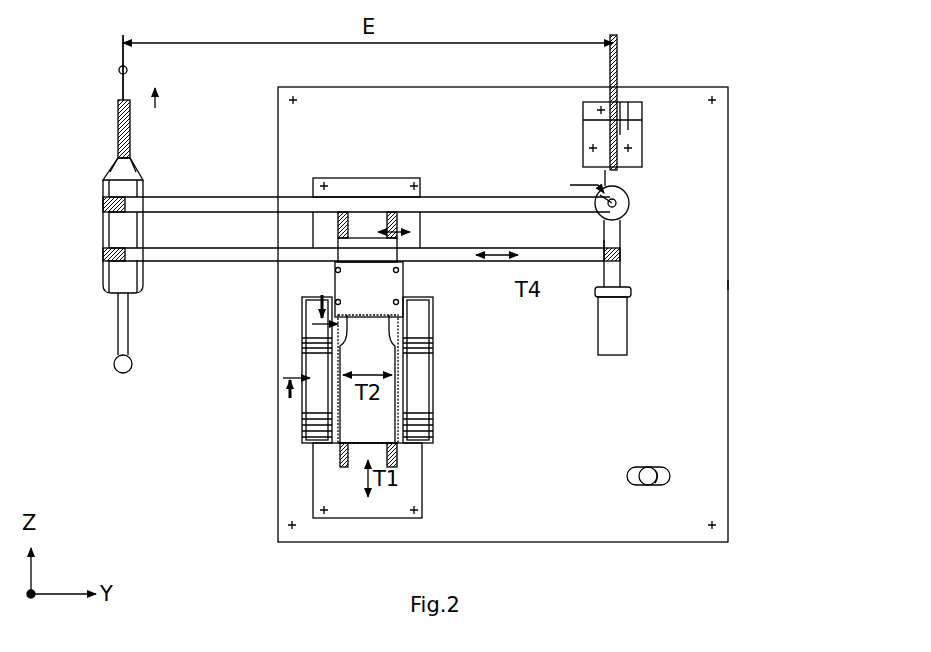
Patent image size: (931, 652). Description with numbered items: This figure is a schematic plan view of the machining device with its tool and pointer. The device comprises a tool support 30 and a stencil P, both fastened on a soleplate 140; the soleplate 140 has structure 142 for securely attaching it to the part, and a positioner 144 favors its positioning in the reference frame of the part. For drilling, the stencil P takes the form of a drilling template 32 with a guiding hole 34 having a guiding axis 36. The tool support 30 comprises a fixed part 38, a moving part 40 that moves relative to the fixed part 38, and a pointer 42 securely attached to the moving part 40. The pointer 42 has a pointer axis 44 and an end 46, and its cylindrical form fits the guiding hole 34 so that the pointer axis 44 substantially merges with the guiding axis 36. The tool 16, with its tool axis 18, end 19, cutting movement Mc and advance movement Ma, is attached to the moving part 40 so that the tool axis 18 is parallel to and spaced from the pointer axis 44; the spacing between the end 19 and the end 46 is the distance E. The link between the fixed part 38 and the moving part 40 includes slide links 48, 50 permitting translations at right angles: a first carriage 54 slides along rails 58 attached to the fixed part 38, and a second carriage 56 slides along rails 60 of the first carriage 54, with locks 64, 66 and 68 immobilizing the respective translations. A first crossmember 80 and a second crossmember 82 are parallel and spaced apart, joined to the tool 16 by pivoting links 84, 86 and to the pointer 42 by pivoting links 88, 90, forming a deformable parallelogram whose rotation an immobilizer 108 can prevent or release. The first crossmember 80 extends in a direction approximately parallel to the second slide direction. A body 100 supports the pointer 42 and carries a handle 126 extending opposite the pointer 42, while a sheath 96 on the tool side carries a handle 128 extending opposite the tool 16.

The tool 16 is at (118, 120).
The tool axis 18 is at (118, 150).
The end 19 is at (125, 104).
The tool support 30 is at (745, 285).
The drilling template 32 is at (642, 158).
The guiding hole 34 is at (600, 104).
The guiding axis 36 is at (630, 128).
The fixed part 38 is at (378, 178).
The moving part 40 is at (365, 238).
The pointer 42 is at (625, 188).
The pointer axis 44 is at (603, 188).
The end 46 is at (598, 128).
The slide link 48 is at (343, 470).
The slide link 50 is at (436, 340).
The first carriage 54 is at (436, 405).
The second carriage 56 is at (404, 285).
The rail 58 is at (340, 462).
The rail 60 is at (305, 340).
The lock 64 is at (290, 398).
The lock 66 is at (318, 297).
The lock 68 is at (412, 232).
The first crossmember 80 is at (215, 262).
The second crossmember 82 is at (220, 205).
The pivoting link 84 is at (104, 254).
The pivoting link 86 is at (104, 204).
The pivoting link 88 is at (621, 258).
The pivoting link 90 is at (622, 215).
The sheath 96 is at (110, 228).
The body 100 is at (604, 245).
The immobilizer 108 is at (570, 185).
The handle 126 is at (625, 345).
The handle 128 is at (118, 328).
The soleplate 140 is at (728, 505).
The structure 142 is at (293, 100).
The positioner 144 is at (670, 470).
The cutting movement Mc is at (118, 70).
The advance movement Ma is at (158, 100).
The stencil P is at (620, 92).